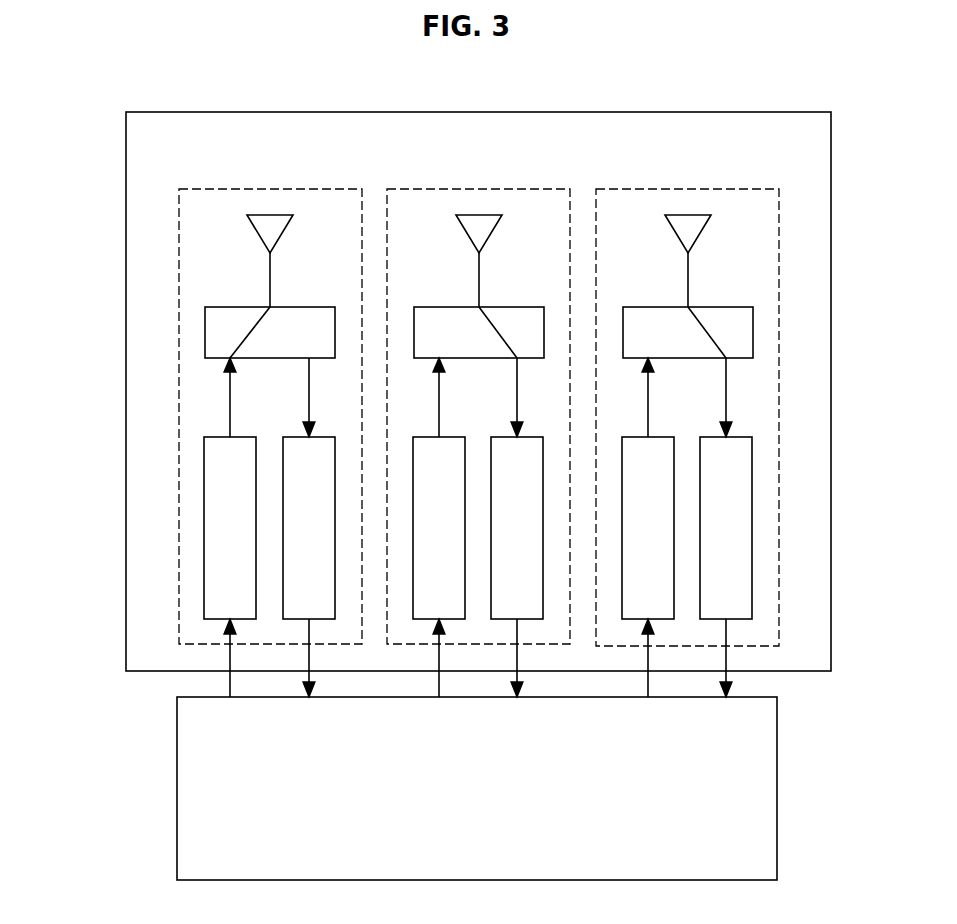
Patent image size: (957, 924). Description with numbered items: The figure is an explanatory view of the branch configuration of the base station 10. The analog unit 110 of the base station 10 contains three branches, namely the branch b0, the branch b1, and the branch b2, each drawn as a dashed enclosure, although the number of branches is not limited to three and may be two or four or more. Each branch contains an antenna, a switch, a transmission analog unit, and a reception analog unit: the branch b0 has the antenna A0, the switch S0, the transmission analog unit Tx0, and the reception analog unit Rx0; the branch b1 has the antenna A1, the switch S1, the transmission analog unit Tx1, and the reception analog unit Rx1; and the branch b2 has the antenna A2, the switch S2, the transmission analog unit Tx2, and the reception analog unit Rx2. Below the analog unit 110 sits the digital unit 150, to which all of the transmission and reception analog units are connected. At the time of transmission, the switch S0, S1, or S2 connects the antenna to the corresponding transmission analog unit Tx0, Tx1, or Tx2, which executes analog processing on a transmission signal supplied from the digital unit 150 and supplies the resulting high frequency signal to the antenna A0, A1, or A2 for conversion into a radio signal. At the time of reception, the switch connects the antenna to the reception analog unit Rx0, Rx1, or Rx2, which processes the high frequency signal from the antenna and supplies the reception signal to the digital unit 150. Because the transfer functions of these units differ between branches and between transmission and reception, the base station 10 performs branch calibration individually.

The base station 10 is at (88, 701).
The analog unit 110 is at (832, 392).
The digital unit 150 is at (778, 789).
The branch b0 is at (268, 189).
The branch b1 is at (477, 189).
The branch b2 is at (686, 189).
The antenna A0 is at (282, 233).
The antenna A1 is at (491, 233).
The antenna A2 is at (700, 233).
The switch S0 is at (270, 332).
The switch S1 is at (479, 332).
The switch S2 is at (688, 332).
The transmission analog unit Tx0 is at (230, 527).
The transmission analog unit Tx1 is at (439, 527).
The transmission analog unit Tx2 is at (648, 527).
The reception analog unit Rx0 is at (309, 527).
The reception analog unit Rx1 is at (517, 527).
The reception analog unit Rx2 is at (726, 527).